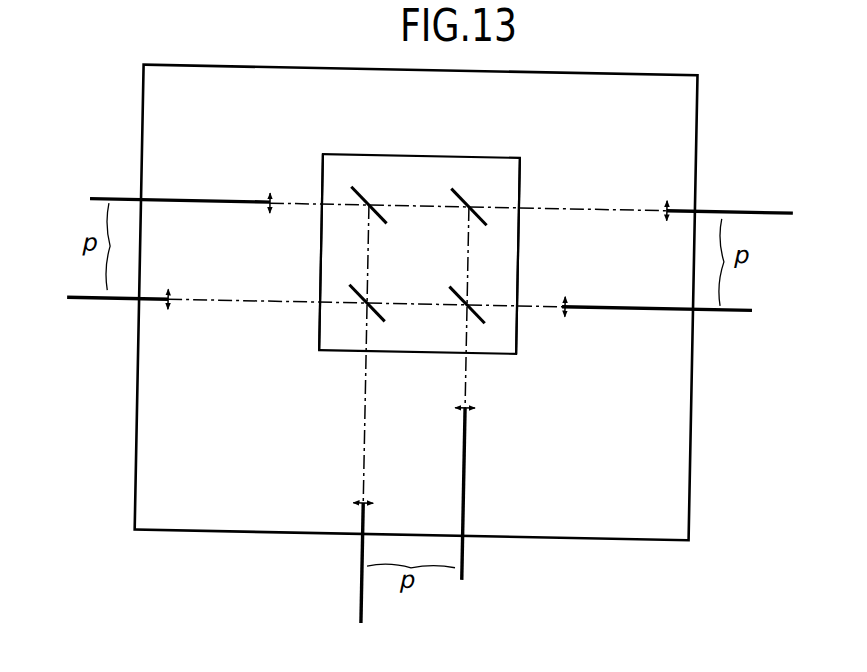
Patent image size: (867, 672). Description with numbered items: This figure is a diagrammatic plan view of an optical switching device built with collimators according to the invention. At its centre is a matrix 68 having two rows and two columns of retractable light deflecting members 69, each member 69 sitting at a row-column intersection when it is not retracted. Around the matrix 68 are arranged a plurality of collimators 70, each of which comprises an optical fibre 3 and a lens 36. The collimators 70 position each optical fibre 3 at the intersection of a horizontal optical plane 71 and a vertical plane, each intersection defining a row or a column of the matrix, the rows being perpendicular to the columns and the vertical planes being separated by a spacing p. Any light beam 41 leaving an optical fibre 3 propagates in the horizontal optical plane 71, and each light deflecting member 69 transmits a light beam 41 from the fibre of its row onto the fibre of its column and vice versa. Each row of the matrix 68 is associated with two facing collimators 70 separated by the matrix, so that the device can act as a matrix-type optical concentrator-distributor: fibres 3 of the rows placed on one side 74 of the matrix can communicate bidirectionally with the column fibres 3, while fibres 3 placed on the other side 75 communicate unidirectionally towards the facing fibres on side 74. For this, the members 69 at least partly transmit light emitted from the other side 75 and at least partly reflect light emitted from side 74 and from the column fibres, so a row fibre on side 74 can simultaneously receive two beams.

The optical fibre 3 is at (101, 204).
The lens 36 is at (269, 196).
The light beam 41 is at (467, 247).
The matrix 68 is at (400, 147).
The light deflecting member 69 is at (462, 201).
The collimator 70 is at (188, 199).
The horizontal optical plane 71 is at (202, 536).
The side of the matrix 74 is at (321, 157).
The other side of the matrix 75 is at (519, 176).